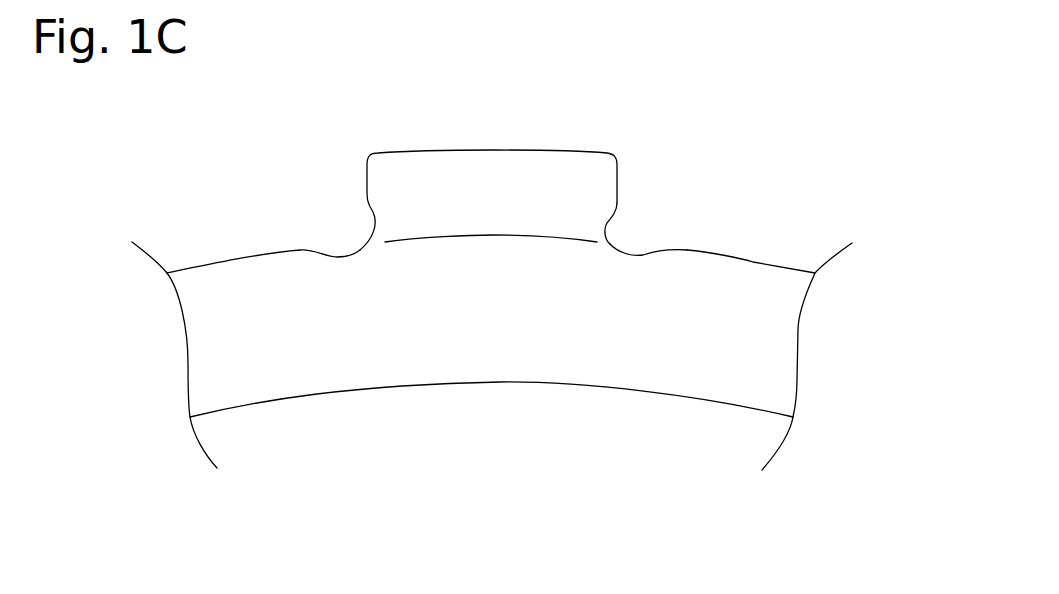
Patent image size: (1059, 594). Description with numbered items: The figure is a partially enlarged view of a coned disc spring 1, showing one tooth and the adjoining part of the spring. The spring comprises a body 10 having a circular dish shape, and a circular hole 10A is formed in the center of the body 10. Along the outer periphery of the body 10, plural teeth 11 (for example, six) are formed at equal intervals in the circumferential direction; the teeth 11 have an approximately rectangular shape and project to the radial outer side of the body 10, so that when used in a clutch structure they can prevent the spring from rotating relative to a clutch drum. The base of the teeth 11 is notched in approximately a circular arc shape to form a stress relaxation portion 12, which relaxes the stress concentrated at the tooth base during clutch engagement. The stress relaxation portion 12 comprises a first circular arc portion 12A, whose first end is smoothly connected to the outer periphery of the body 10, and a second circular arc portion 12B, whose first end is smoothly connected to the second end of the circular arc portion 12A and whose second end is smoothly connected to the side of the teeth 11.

The coned disc spring 1 is at (745, 113).
The body 10 is at (750, 277).
The hole 10A is at (283, 424).
The teeth 11 is at (523, 165).
The stress relaxation portion 12 is at (671, 180).
The first circular arc portion 12A is at (645, 255).
The second circular arc portion 12B is at (607, 223).